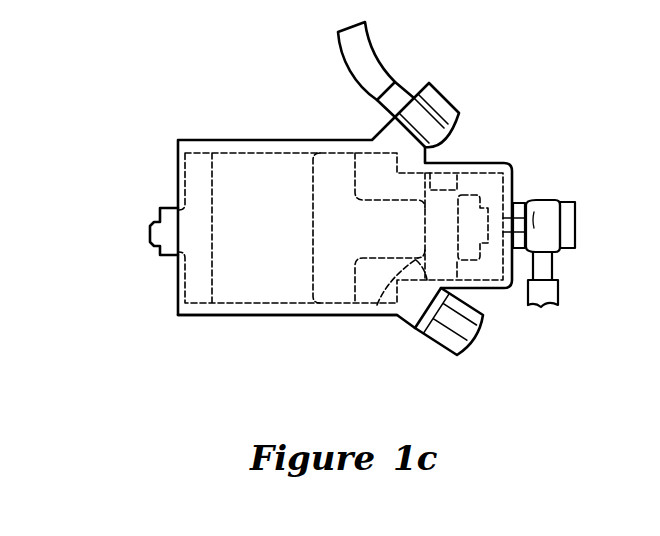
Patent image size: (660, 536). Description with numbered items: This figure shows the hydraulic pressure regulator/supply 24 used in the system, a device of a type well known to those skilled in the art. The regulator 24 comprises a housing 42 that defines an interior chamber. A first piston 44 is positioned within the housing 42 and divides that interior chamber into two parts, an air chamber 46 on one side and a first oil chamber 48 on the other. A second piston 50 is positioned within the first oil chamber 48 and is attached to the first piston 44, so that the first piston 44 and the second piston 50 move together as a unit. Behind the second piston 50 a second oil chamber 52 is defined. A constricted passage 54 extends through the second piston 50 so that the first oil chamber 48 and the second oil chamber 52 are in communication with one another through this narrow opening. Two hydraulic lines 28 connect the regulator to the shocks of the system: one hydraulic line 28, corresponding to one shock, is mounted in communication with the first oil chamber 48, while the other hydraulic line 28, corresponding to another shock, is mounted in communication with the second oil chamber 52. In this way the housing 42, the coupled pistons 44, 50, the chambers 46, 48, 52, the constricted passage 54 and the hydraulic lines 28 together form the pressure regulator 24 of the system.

The hydraulic pressure regulator/supply 24 is at (242, 116).
The hydraulic line 28 is at (383, 60).
The housing 42 is at (203, 317).
The first piston 44 is at (313, 258).
The air chamber 46 is at (237, 182).
The first oil chamber 48 is at (370, 182).
The second piston 50 is at (377, 305).
The second oil chamber 52 is at (487, 263).
The constricted passage 54 is at (468, 190).